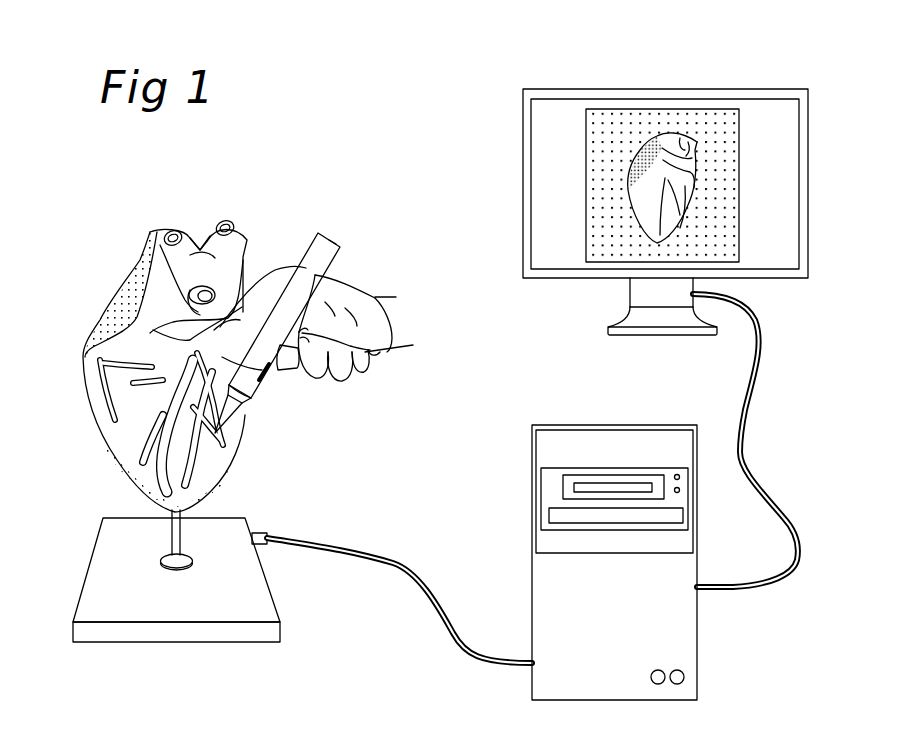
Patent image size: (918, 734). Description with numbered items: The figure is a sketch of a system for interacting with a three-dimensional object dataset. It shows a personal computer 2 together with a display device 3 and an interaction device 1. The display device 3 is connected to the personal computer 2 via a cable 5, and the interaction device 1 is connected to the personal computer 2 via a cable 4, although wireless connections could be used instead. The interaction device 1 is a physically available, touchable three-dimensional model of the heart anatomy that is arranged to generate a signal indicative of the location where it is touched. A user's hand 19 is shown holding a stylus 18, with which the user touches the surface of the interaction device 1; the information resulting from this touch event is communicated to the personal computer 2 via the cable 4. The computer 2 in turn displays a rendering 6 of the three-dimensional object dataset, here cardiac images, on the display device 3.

The interaction device 1 is at (130, 272).
The personal computer 2 is at (550, 442).
The display device 3 is at (568, 97).
The cable 4 is at (350, 553).
The cable 5 is at (745, 407).
The rendering 6 is at (643, 157).
The stylus 18 is at (317, 237).
The user's hand 19 is at (366, 353).